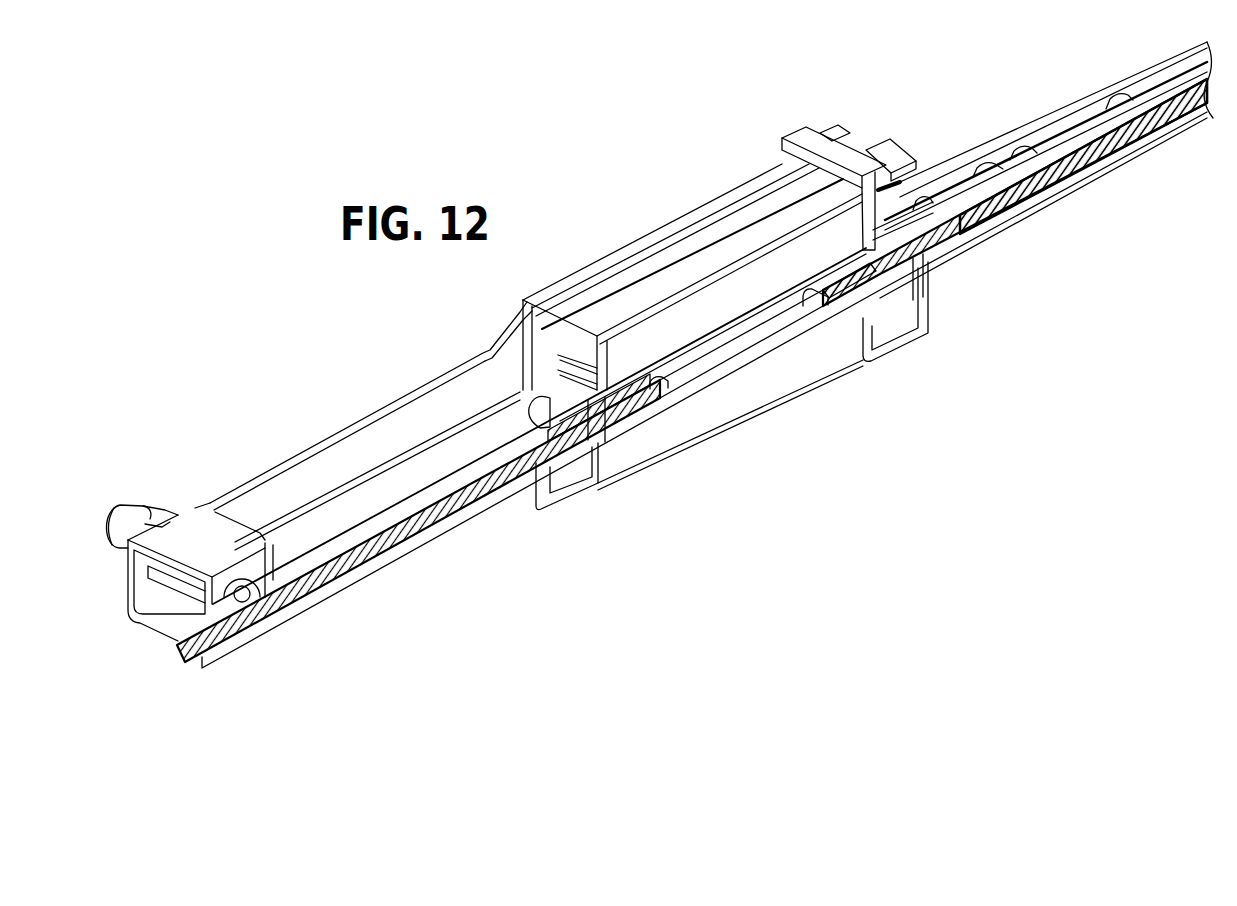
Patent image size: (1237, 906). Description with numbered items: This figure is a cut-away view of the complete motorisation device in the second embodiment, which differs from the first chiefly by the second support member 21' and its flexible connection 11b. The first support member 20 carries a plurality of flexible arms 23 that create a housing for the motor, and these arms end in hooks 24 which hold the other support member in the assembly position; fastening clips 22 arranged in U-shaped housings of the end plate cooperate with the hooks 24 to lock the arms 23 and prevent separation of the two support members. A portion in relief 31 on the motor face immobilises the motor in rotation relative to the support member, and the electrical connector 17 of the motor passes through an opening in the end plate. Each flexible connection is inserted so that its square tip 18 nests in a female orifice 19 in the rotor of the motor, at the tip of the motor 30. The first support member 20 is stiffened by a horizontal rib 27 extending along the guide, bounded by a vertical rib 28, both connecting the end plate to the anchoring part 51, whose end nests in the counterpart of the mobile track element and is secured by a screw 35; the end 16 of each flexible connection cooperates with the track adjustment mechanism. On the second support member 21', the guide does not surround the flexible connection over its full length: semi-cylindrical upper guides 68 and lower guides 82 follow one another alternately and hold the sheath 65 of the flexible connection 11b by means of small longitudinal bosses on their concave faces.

The second flexible connection 11b is at (1102, 155).
The end of the flexible connection 16 is at (178, 652).
The electrical connector 17 is at (893, 150).
The square tip 18 is at (645, 405).
The female orifice 19 is at (662, 383).
The first support member 20 is at (417, 358).
The second support member 21' is at (1049, 136).
The fastening clips 22 is at (798, 127).
The flexible arms 23 is at (638, 242).
The hooks 24 is at (840, 130).
The horizontal rib 27 is at (312, 527).
The vertical rib 28 is at (352, 428).
The tip of the motor 30 is at (607, 433).
The portion in relief 31 is at (573, 470).
The screw 35 is at (120, 512).
The anchoring part 51 is at (200, 530).
The sheath 65 is at (1073, 163).
The upper guides 68 is at (1080, 123).
The lower guides 82 is at (1170, 127).